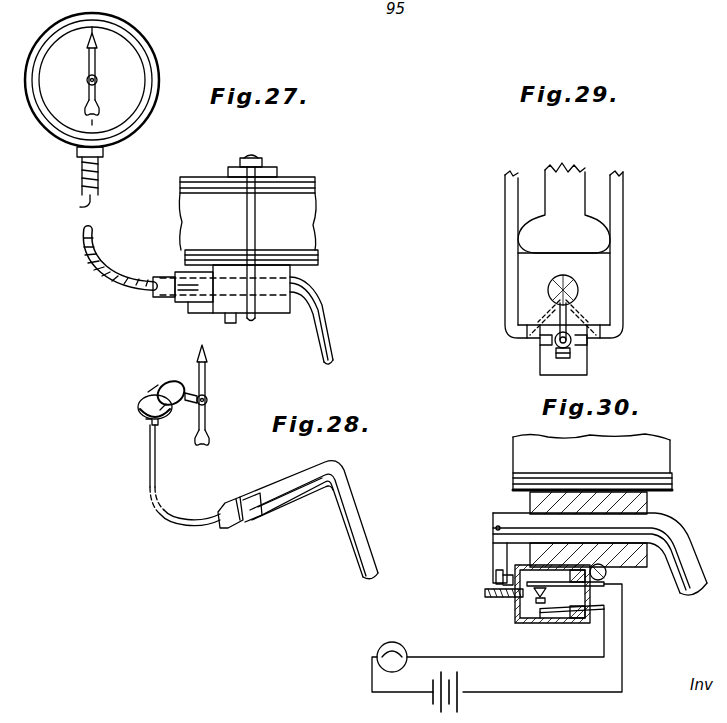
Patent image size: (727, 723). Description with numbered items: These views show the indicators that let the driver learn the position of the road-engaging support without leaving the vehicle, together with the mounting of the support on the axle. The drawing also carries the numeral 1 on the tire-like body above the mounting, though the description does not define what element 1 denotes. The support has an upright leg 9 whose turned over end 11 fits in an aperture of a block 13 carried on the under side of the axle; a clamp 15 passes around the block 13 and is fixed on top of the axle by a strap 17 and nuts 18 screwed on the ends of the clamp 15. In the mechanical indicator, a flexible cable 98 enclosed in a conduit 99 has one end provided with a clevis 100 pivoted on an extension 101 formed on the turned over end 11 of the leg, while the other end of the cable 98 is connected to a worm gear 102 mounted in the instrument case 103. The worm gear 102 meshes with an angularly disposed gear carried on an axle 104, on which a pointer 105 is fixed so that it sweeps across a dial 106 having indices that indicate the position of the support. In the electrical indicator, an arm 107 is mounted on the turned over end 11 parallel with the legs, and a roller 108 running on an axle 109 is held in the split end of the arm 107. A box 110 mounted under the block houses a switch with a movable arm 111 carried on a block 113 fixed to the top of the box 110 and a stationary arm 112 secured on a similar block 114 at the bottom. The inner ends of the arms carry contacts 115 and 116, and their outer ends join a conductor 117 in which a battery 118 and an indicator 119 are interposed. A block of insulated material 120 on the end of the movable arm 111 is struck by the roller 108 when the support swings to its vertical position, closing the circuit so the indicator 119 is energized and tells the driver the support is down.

In FIG. 27, the tire 1 is at (314, 220).
In FIG. 29, the tire 1 is at (543, 170).
In FIG. 30, the tire 1 is at (655, 458).
In FIG. 27, the upright leg 9 is at (321, 325).
In FIG. 28, the upright leg 9 is at (350, 546).
In FIG. 30, the upright leg 9 is at (695, 557).
In FIG. 27, the turned over end 11 is at (300, 292).
In FIG. 28, the turned over end 11 is at (284, 505).
In FIG. 29, the turned over end 11 is at (578, 288).
In FIG. 30, the turned over end 11 is at (514, 522).
In FIG. 27, the block 13 is at (270, 314).
In FIG. 30, the block 13 is at (648, 503).
In FIG. 27, the clamp 15 is at (246, 221).
In FIG. 29, the clamp 15 is at (517, 228).
In FIG. 27, the strap 17 is at (278, 173).
In FIG. 27, the nut 18 is at (258, 160).
In FIG. 27, the flexible cable 98 is at (80, 202).
In FIG. 28, the flexible cable 98 is at (149, 466).
In FIG. 27, the conduit 99 is at (82, 178).
In FIG. 27, the clevis 100 is at (175, 300).
In FIG. 28, the clevis 100 is at (236, 528).
In FIG. 27, the extension 101 is at (198, 308).
In FIG. 28, the extension 101 is at (258, 522).
In FIG. 28, the worm gear 102 is at (140, 410).
In FIG. 27, the instrument case 103 is at (152, 86).
In FIG. 28, the instrument case 103 is at (163, 386).
In FIG. 28, the axle 104 is at (192, 405).
In FIG. 27, the pointer 105 is at (86, 95).
In FIG. 28, the pointer 105 is at (208, 418).
In FIG. 27, the dial 106 is at (110, 38).
In FIG. 29, the arm 107 is at (566, 318).
In FIG. 30, the arm 107 is at (493, 552).
In FIG. 29, the roller 108 is at (580, 345).
In FIG. 30, the roller 108 is at (496, 573).
In FIG. 29, the axle 109 is at (553, 345).
In FIG. 30, the axle 109 is at (500, 583).
In FIG. 29, the box 110 is at (587, 373).
In FIG. 30, the box 110 is at (518, 620).
In FIG. 30, the movable arm 111 is at (607, 574).
In FIG. 30, the stationary arm 112 is at (565, 623).
In FIG. 30, the block 113 is at (592, 591).
In FIG. 30, the block 114 is at (592, 620).
In FIG. 30, the contact 115 is at (562, 588).
In FIG. 30, the contact 116 is at (541, 604).
In FIG. 30, the conductor 117 is at (622, 667).
In FIG. 30, the battery 118 is at (449, 708).
In FIG. 30, the indicator 119 is at (392, 642).
In FIG. 29, the block of insulated material 120 is at (556, 355).
In FIG. 30, the block of insulated material 120 is at (503, 598).